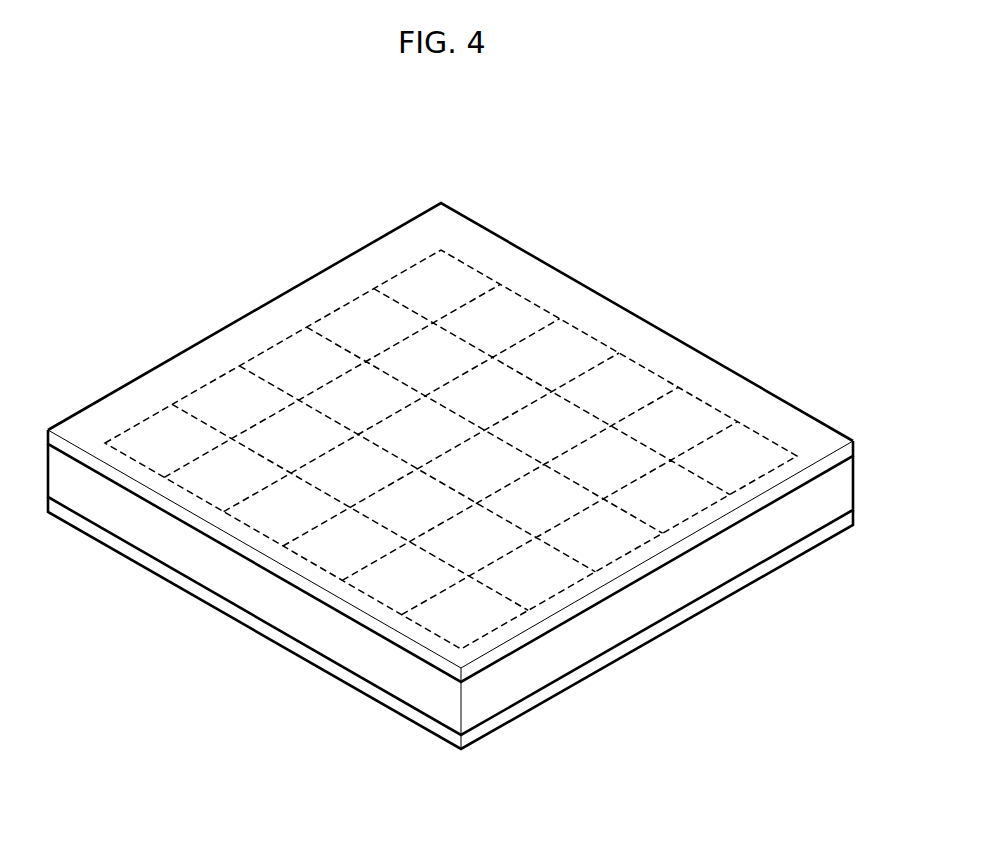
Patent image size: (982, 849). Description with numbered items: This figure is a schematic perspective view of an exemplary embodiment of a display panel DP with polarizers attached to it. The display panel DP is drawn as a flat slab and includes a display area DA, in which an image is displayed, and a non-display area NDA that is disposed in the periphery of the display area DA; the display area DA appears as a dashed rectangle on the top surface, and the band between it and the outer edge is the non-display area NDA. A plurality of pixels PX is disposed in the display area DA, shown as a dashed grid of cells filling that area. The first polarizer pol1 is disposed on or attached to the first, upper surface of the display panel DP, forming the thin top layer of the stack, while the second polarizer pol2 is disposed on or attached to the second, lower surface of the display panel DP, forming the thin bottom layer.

The pixels PX is at (449, 286).
The non-display area NDA is at (612, 332).
The display area DA is at (743, 470).
The first polarizer pol1 is at (507, 648).
The display panel DP is at (598, 635).
The second polarizer pol2 is at (707, 600).